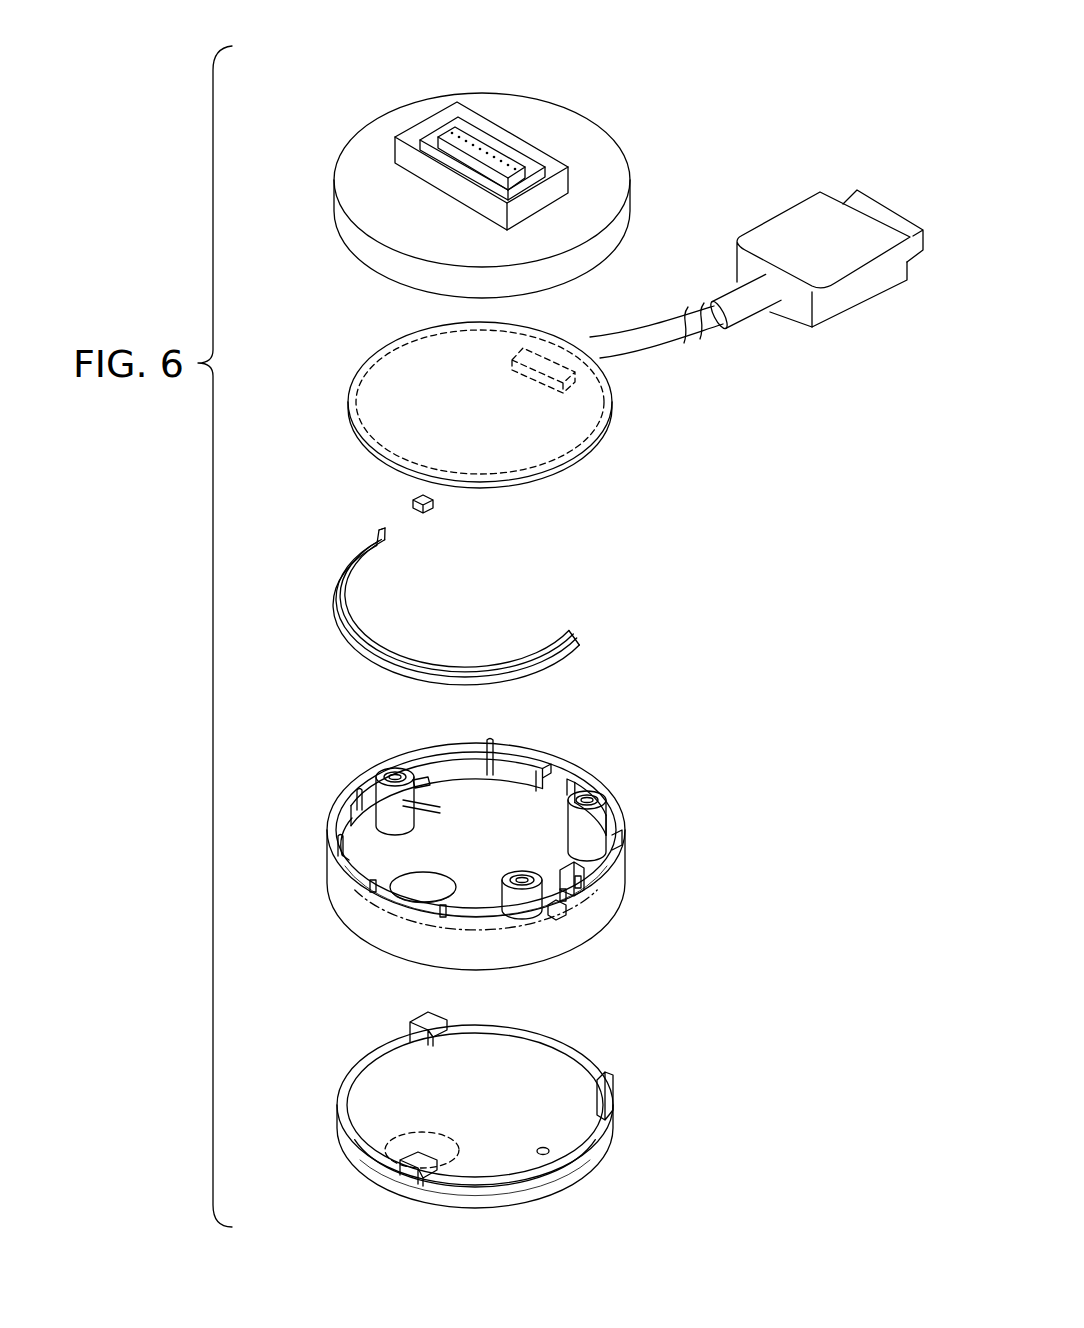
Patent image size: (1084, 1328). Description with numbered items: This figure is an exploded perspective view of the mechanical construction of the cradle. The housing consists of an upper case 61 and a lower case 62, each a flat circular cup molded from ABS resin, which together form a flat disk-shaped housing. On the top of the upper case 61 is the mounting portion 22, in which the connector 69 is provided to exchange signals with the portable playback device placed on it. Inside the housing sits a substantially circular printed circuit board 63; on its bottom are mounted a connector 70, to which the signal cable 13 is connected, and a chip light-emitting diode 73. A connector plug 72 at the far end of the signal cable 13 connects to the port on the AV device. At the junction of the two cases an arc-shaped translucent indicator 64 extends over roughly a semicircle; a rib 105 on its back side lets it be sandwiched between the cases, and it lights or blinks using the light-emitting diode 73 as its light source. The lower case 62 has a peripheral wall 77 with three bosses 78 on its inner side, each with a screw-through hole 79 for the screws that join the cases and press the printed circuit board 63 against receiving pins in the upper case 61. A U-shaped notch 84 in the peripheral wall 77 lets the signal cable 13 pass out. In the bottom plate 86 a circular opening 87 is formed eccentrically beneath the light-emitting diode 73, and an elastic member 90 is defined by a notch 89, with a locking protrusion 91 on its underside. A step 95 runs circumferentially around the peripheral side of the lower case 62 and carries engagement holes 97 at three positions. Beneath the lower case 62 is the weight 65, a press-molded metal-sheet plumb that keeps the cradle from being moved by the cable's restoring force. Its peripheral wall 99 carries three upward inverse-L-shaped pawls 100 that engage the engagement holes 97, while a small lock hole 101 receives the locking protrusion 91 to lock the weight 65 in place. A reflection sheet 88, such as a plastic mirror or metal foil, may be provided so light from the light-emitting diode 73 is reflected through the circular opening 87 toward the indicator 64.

The mounting portion 22 is at (425, 120).
The connector 69 is at (490, 147).
The upper case 61 is at (597, 162).
The connector plug 72 is at (847, 300).
The signal cable 13 is at (640, 343).
The connector 70 is at (593, 438).
The printed circuit board 63 is at (523, 453).
The chip light-emitting diode 73 is at (433, 510).
The indicator 64 is at (518, 660).
The rib 105 is at (368, 653).
The lower case 62 is at (511, 839).
The peripheral wall 77 is at (360, 918).
The bottom plate 86 is at (508, 810).
The U-shaped notch 84 is at (570, 780).
The step 95 is at (350, 828).
The screw-through hole 79 is at (383, 767).
The engagement holes 97 is at (428, 775).
The bosses 78 is at (407, 805).
The elastic member 90 is at (522, 872).
The notch 89 is at (572, 873).
The circular opening 87 is at (415, 885).
The locking protrusion 91 is at (557, 920).
The weight 65 is at (492, 1105).
The peripheral wall 99 is at (575, 1172).
The inverse-L-shaped pawls 100 is at (423, 1014).
The lock hole 101 is at (548, 1148).
The reflection sheet 88 is at (397, 1135).